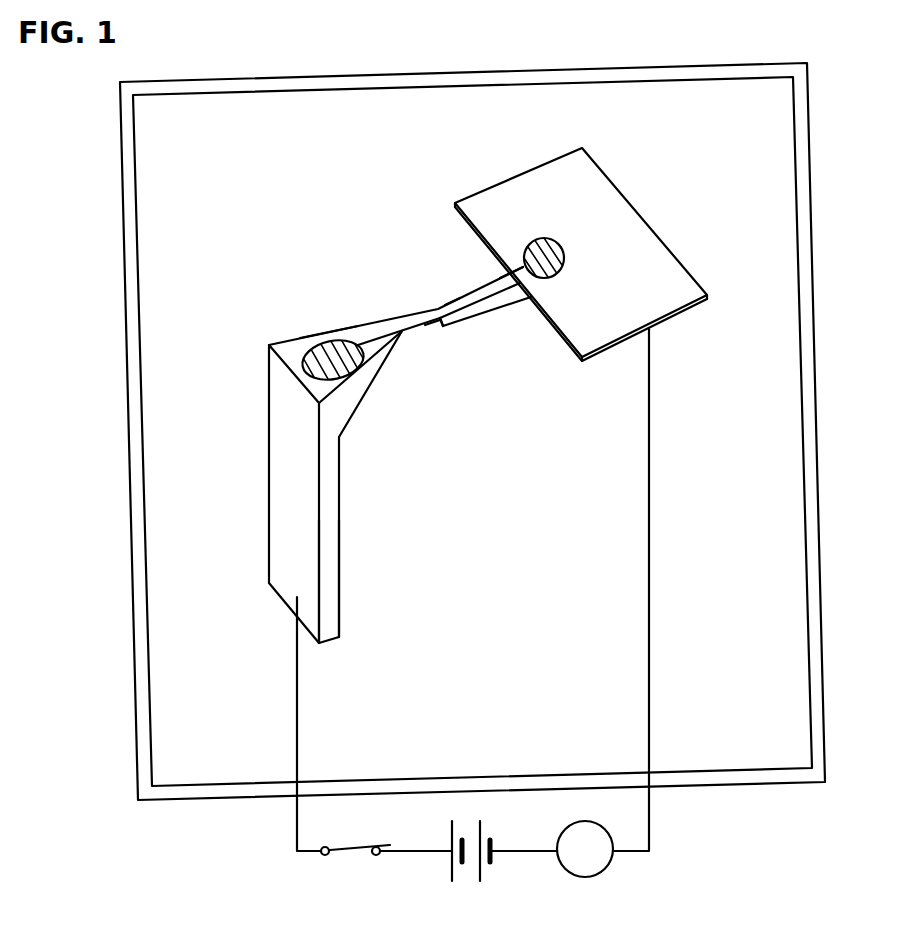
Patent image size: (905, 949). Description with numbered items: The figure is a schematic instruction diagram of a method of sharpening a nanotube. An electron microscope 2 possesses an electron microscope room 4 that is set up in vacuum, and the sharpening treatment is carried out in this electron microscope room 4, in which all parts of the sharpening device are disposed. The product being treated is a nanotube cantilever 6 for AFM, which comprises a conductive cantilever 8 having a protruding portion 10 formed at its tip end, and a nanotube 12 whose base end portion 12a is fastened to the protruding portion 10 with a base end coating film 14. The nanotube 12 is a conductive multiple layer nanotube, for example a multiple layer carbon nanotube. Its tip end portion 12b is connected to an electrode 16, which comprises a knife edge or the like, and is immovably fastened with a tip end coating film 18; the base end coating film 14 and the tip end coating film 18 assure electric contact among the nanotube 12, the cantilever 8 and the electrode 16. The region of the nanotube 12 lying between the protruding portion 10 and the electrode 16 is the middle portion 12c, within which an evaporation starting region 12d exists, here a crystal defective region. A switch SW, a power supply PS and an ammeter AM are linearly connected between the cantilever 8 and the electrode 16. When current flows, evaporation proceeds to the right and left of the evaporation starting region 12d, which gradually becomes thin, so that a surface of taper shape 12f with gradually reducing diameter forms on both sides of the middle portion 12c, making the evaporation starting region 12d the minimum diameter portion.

The electron microscope 2 is at (634, 63).
The electron microscope room 4 is at (778, 186).
The nanotube cantilever 6 is at (315, 487).
The conductive cantilever 8 is at (330, 558).
The protruding portion 10 is at (344, 386).
The nanotube 12 is at (406, 326).
The base end portion 12a is at (338, 340).
The tip end portion 12b is at (530, 298).
The middle portion 12c is at (405, 337).
The evaporation starting region 12d is at (453, 296).
The taper shape 12f is at (440, 333).
The base end coating film 14 is at (318, 345).
The electrode 16 is at (634, 240).
The tip end coating film 18 is at (530, 239).
The switch SW is at (352, 860).
The power supply PS is at (448, 862).
The ammeter AM is at (588, 878).